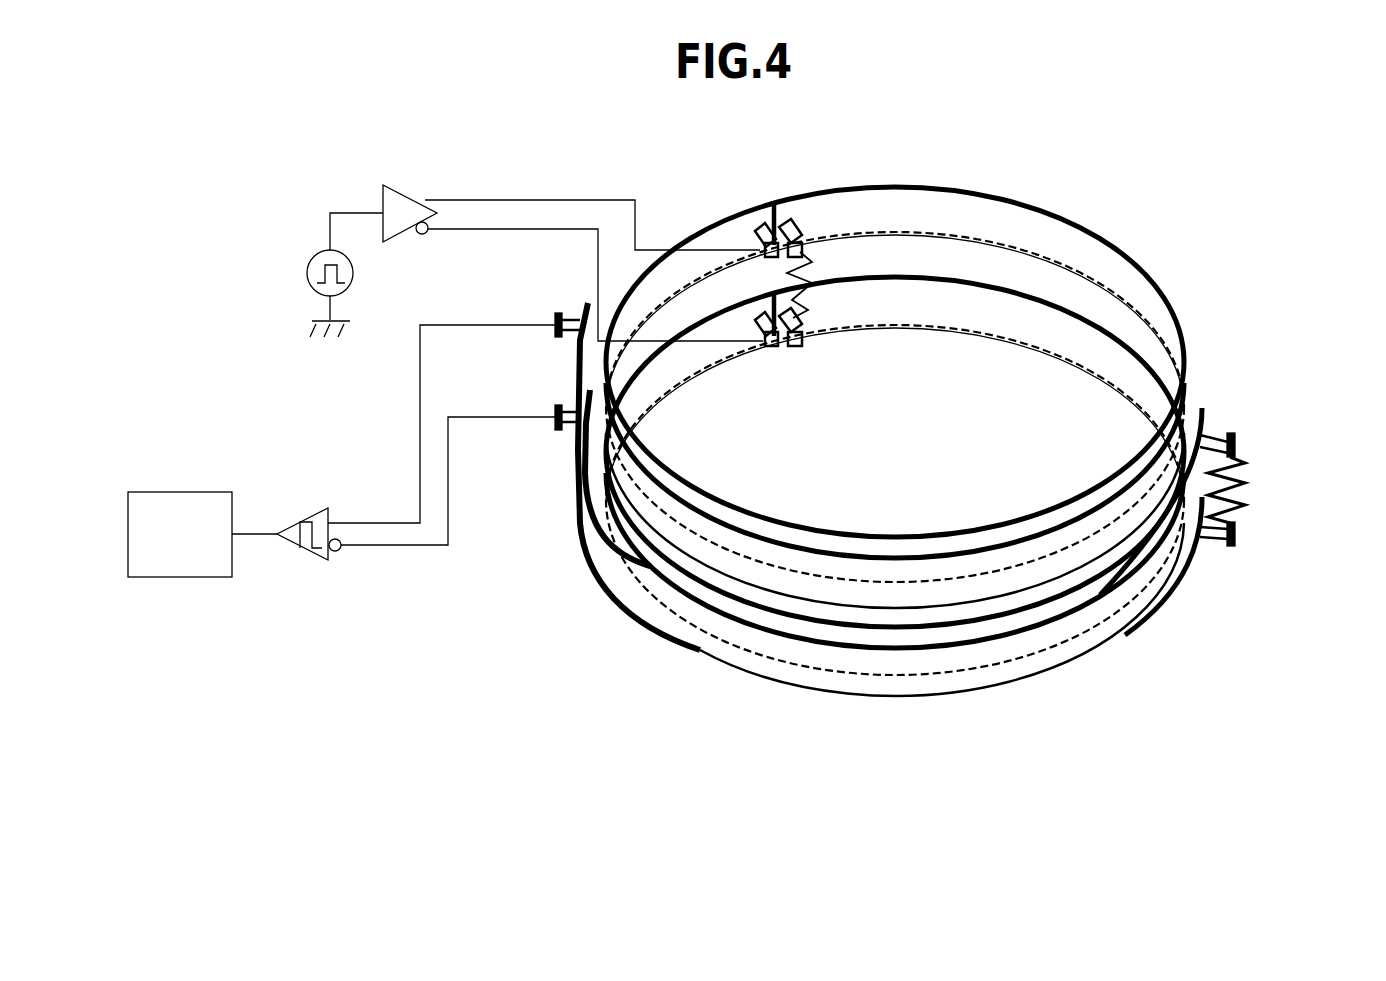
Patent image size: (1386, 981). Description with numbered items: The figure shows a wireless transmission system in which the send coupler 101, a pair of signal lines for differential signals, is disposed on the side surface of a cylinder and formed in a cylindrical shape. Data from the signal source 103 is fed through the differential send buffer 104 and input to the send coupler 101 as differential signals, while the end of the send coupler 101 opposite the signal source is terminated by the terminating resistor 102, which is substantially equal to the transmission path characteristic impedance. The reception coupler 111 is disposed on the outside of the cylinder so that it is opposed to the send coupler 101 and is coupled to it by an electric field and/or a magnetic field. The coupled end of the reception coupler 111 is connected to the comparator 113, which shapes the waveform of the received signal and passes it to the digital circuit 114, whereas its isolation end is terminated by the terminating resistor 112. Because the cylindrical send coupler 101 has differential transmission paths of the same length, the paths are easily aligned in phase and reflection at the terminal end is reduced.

The send coupler 101 is at (1082, 548).
The terminating resistor 102 is at (807, 240).
The signal source 103 is at (305, 272).
The differential send buffer 104 is at (397, 190).
The reception coupler 111 is at (1037, 320).
The terminating resistor 112 is at (1245, 478).
The comparator 113 is at (305, 508).
The digital circuit 114 is at (187, 492).